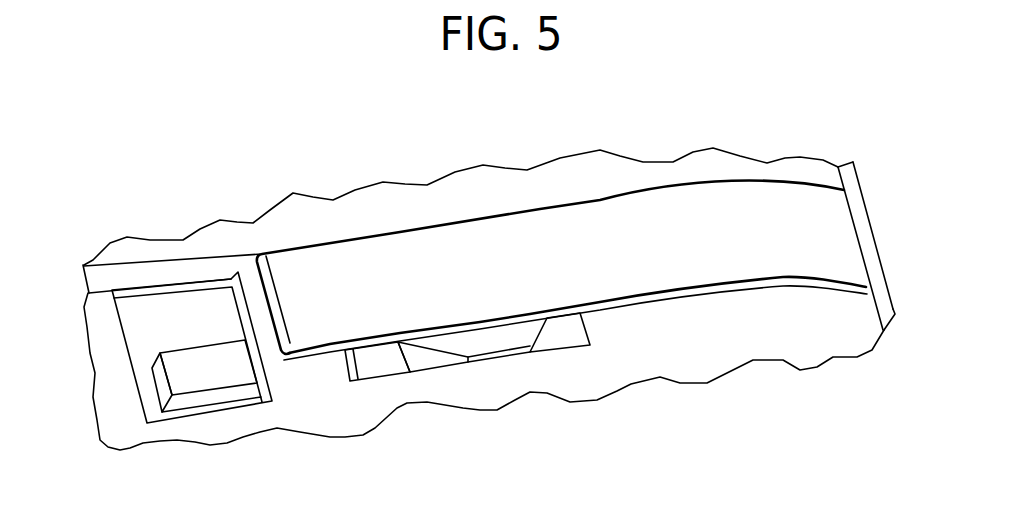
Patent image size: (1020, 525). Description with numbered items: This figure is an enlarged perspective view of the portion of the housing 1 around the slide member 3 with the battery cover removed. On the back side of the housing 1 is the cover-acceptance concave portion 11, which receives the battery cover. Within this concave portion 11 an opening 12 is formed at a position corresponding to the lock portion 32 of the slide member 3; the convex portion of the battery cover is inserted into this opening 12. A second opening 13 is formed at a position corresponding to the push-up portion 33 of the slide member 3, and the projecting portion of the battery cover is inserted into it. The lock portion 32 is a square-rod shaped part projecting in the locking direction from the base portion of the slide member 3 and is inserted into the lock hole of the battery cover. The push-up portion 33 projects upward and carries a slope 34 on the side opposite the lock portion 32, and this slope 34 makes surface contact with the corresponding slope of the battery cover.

The housing 1 is at (313, 228).
The slide member 3 is at (708, 222).
The cover-acceptance concave portion 11 is at (312, 412).
The opening 12 is at (170, 308).
The opening 13 is at (568, 332).
The lock portion 32 is at (203, 382).
The push-up portion 33 is at (387, 365).
The slope 34 is at (438, 358).